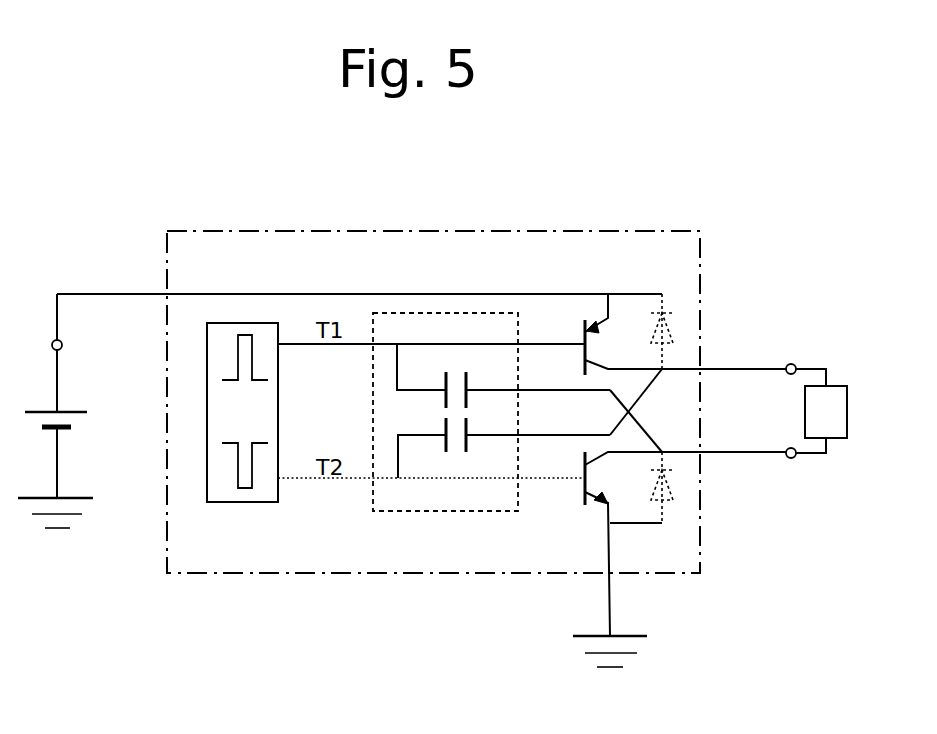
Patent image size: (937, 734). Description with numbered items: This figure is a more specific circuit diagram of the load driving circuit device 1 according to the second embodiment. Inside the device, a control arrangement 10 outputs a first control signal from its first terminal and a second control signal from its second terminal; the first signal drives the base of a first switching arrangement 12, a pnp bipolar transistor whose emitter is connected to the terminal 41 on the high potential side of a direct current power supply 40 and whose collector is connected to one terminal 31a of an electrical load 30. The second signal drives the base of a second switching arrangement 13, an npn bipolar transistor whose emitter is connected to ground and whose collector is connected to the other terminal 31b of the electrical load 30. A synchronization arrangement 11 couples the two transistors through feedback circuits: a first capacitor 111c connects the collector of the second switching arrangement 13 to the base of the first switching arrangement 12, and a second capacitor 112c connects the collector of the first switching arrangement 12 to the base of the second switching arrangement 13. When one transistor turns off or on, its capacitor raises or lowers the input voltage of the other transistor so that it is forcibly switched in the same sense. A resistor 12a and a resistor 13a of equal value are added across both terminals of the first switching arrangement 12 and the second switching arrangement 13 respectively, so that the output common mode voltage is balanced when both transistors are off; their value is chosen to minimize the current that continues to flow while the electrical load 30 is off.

The control unit 1 is at (248, 212).
The control arrangement 10 is at (215, 502).
The synchronization arrangement 11 is at (388, 512).
The first capacitor 111c is at (456, 372).
The second capacitor 112c is at (456, 452).
The first switching arrangement 12 is at (597, 362).
The resistor 12a is at (674, 314).
The second switching arrangement 13 is at (583, 500).
The resistor 13a is at (675, 490).
The electrical load 30 is at (847, 400).
The terminal 31a is at (792, 363).
The terminal 31b is at (792, 459).
The direct current power supply 40 is at (80, 408).
The terminal 41 is at (63, 345).